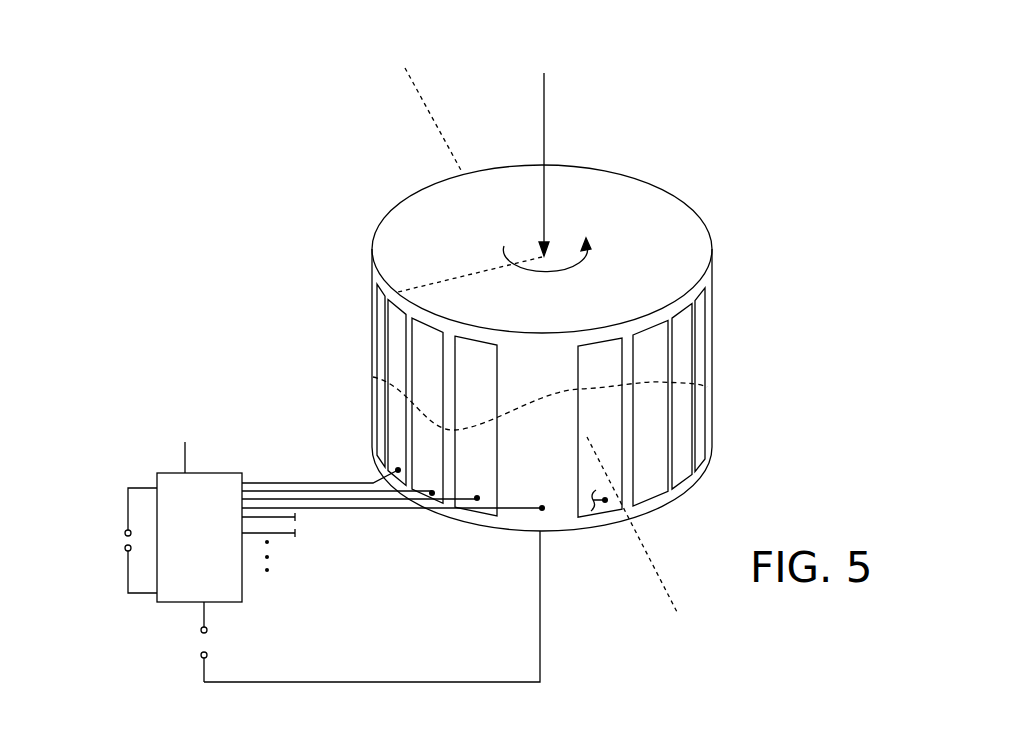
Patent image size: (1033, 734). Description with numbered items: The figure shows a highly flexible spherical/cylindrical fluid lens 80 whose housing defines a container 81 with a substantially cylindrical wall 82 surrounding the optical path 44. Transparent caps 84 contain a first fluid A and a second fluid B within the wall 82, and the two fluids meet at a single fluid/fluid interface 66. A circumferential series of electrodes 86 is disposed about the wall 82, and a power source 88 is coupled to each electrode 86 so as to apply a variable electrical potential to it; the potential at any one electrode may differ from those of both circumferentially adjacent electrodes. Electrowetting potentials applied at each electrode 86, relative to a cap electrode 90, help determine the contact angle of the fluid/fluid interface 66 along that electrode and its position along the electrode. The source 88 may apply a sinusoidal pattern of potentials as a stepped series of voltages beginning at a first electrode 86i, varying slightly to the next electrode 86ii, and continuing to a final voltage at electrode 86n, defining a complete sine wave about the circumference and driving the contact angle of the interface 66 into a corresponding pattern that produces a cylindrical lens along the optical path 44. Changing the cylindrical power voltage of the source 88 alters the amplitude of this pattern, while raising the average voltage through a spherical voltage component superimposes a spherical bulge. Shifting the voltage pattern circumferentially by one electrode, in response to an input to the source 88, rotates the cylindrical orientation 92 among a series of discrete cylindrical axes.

The fluid lens 80 is at (706, 58).
The container 81 is at (665, 188).
The cylindrical wall 82 is at (382, 221).
The transparent caps 84 is at (695, 243).
The optical path 44 is at (547, 143).
The electrodes 86 is at (397, 336).
The final electrode 86n is at (385, 288).
The first electrode 86i is at (395, 318).
The next electrode 86ii is at (405, 437).
The fluid/fluid interface 66 is at (657, 379).
The cylindrical orientation 92 is at (643, 543).
The power source 88 is at (153, 474).
The cap electrode 90 is at (540, 562).
The first fluid A is at (410, 365).
The second fluid B is at (670, 432).